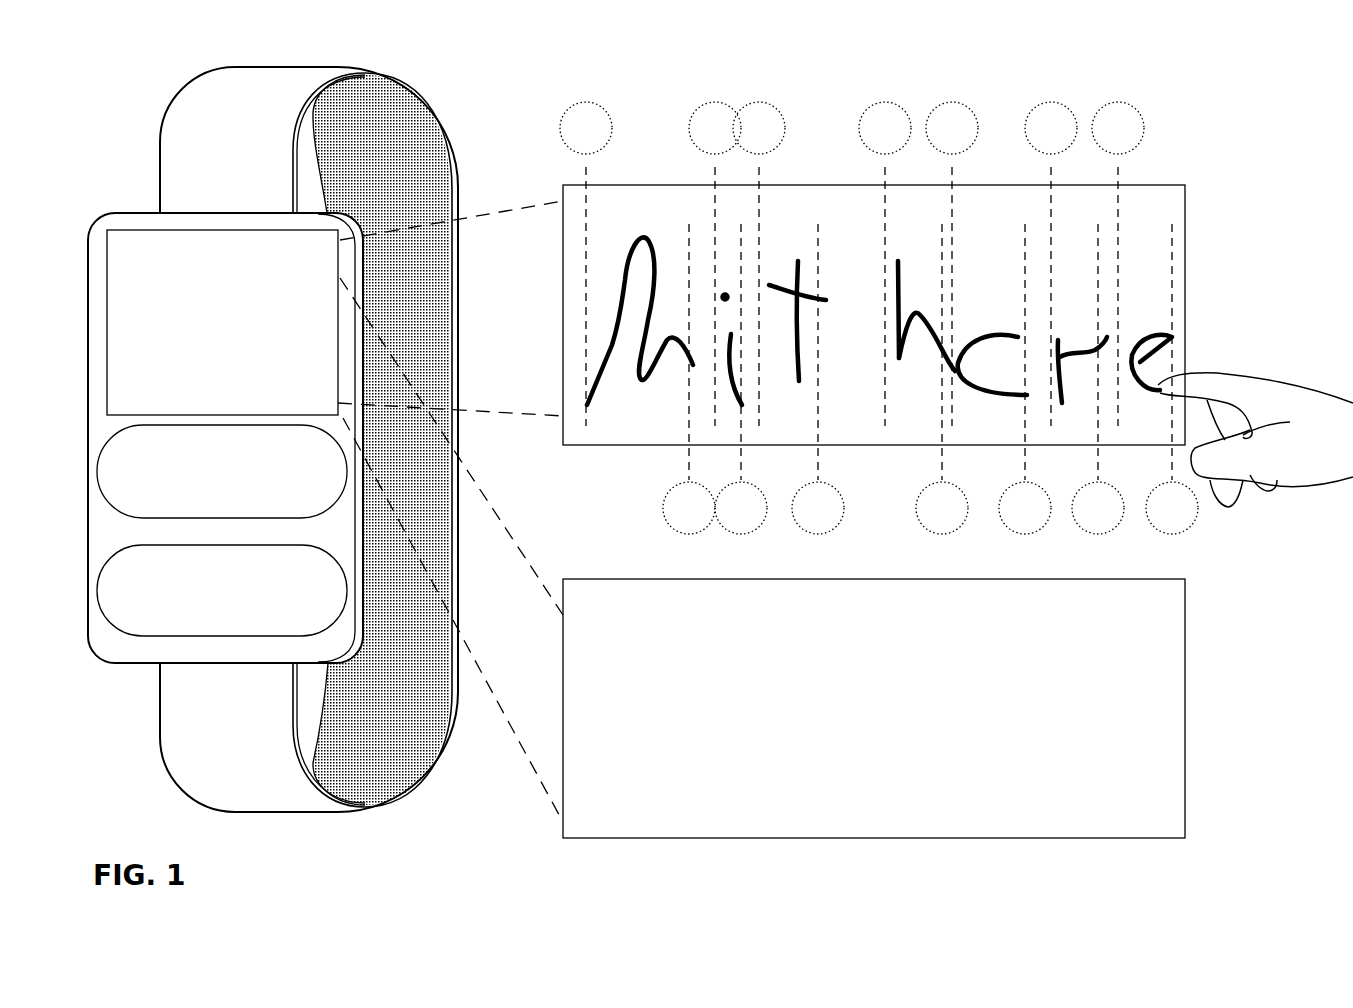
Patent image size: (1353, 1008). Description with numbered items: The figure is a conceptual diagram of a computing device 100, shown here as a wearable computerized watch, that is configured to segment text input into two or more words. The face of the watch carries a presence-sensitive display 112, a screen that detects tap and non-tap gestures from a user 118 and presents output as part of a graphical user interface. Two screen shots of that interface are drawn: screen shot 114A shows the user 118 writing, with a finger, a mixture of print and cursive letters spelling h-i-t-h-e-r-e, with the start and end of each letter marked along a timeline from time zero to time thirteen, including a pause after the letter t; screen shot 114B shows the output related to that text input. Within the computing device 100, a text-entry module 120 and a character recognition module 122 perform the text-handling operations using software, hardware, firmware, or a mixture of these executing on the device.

The computing device 100 is at (316, 430).
The presence-sensitive display 112 is at (222, 322).
The screen shot 114A is at (1174, 188).
The screen shot 114B is at (1170, 665).
The user 118 is at (1254, 375).
The text-entry module 120 is at (222, 471).
The character recognition module 122 is at (222, 590).